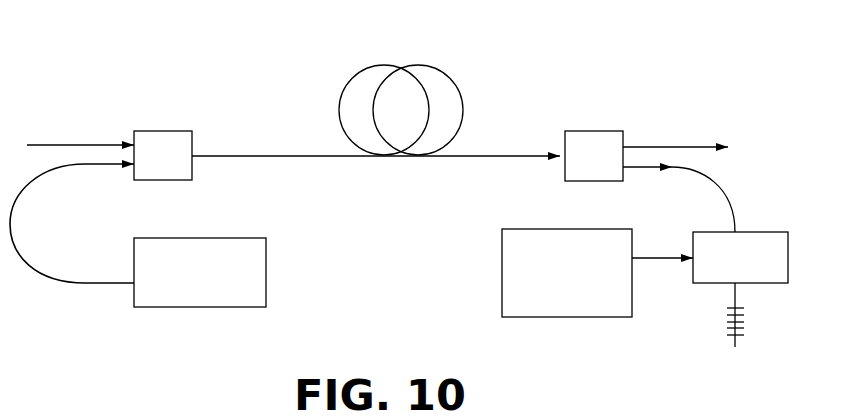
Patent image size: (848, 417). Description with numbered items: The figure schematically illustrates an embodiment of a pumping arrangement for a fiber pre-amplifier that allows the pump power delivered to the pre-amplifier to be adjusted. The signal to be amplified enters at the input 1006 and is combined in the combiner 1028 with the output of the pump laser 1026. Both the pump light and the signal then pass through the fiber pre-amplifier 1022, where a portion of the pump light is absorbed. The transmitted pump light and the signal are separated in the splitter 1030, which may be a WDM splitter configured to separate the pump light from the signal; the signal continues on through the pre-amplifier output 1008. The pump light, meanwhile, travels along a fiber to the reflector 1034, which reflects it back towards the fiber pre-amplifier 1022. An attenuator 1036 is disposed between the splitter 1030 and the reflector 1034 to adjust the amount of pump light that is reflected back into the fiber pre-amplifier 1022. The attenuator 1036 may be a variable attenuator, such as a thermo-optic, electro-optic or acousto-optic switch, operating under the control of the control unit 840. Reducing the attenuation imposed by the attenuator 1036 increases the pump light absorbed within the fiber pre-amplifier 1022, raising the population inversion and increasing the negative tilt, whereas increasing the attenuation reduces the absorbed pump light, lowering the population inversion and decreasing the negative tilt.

The input 1006 is at (78, 145).
The combiner 1028 is at (166, 131).
The pump laser 1026 is at (266, 265).
The fiber pre-amplifier 1022 is at (443, 70).
The splitter 1030 is at (597, 131).
The pre-amplifier output 1008 is at (675, 147).
The attenuator 1036 is at (755, 232).
The reflector 1034 is at (747, 327).
The control unit 840 is at (566, 317).